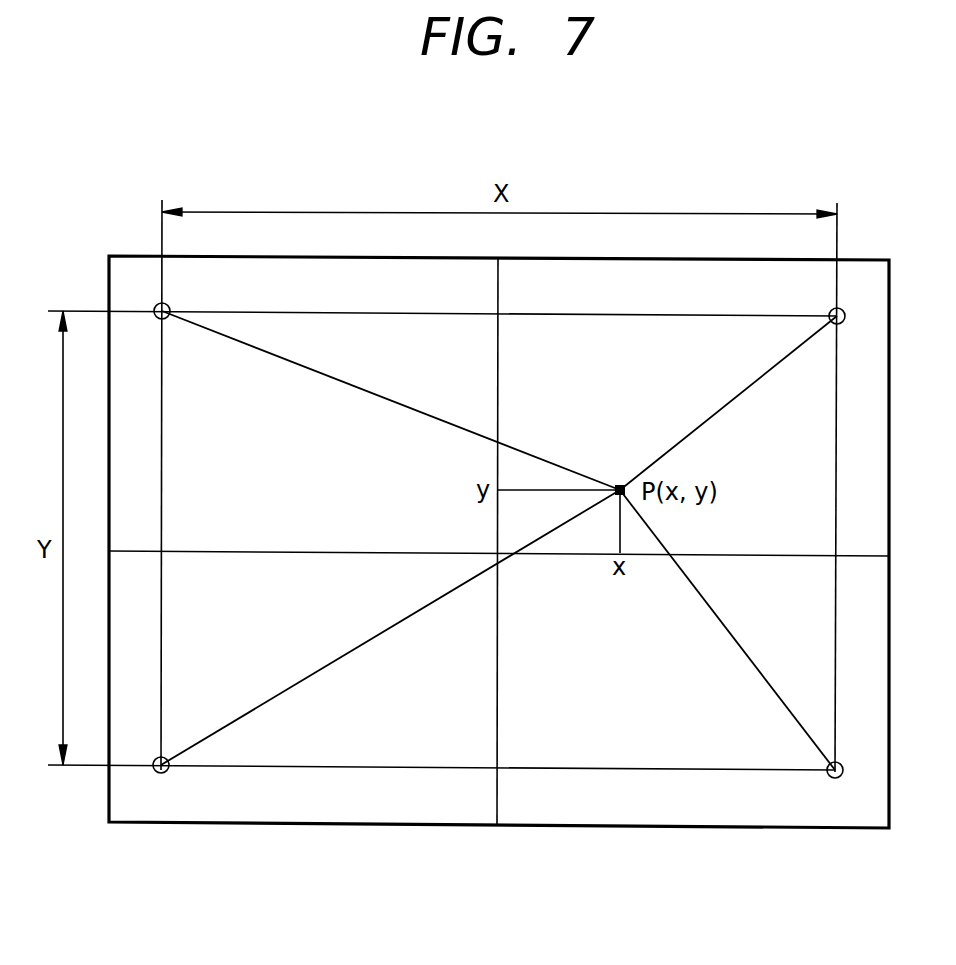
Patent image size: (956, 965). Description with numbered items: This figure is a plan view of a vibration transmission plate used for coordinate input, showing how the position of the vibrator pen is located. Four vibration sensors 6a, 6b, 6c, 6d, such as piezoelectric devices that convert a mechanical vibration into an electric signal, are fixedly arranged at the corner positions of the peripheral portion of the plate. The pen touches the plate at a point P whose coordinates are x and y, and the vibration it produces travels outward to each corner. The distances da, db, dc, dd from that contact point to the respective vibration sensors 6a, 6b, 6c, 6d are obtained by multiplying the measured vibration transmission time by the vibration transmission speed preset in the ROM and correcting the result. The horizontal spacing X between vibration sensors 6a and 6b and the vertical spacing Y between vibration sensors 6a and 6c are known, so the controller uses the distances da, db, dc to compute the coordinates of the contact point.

The vibration sensor 6a is at (180, 298).
The vibration sensor 6b is at (819, 305).
The vibration sensor 6c is at (176, 781).
The vibration sensor 6d is at (817, 787).
The distance da is at (408, 408).
The distance db is at (711, 413).
The distance dc is at (318, 664).
The distance dd is at (770, 681).